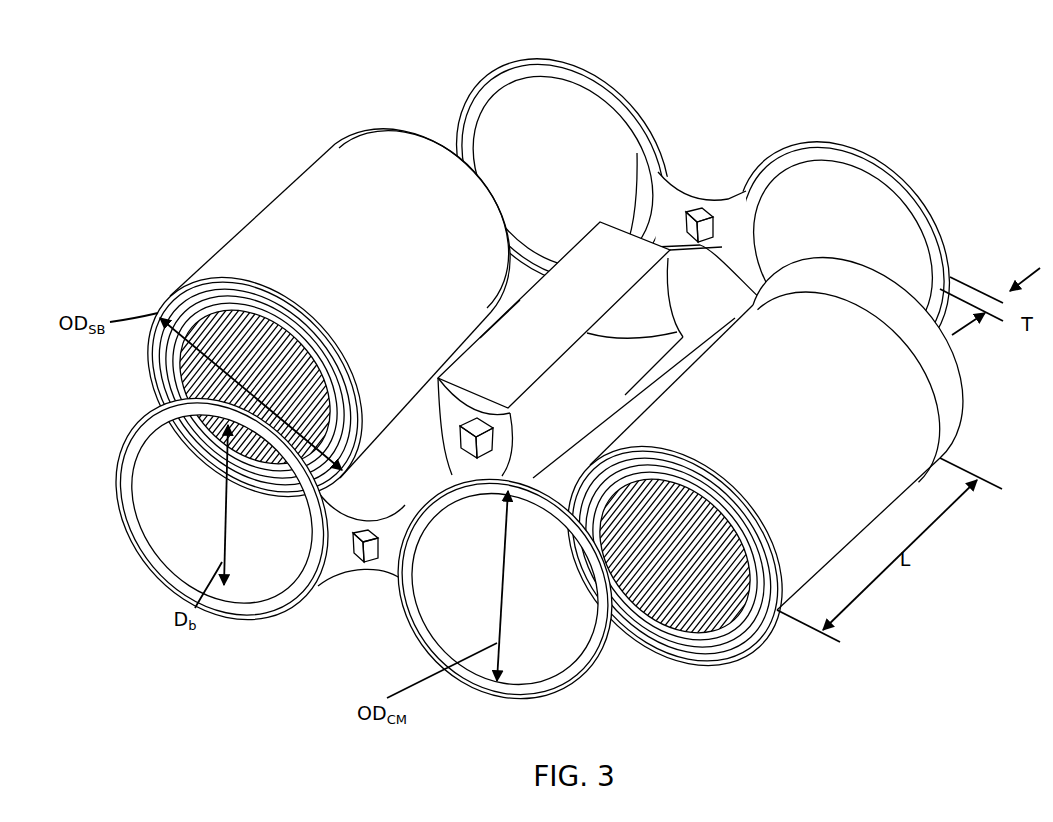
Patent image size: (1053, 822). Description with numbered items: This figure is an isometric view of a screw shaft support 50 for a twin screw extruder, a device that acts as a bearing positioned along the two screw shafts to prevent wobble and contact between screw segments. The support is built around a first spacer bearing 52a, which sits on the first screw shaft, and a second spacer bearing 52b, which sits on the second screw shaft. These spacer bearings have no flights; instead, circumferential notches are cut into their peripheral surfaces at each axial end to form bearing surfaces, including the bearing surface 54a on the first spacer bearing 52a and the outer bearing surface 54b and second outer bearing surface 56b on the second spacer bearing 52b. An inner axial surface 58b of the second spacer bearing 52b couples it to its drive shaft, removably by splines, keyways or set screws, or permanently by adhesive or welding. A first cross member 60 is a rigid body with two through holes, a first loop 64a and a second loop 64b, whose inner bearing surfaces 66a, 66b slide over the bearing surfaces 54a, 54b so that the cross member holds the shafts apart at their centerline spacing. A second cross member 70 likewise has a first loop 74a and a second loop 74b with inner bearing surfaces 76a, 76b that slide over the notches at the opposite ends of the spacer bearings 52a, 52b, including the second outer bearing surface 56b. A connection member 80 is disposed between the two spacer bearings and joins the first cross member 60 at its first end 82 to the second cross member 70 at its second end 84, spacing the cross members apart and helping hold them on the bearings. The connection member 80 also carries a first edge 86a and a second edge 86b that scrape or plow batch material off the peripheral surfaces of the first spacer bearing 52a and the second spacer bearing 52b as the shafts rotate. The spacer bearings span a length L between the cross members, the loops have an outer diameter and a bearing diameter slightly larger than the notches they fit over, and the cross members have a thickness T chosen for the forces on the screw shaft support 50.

The screw shaft support 50 is at (250, 46).
The first spacer bearing 52a is at (310, 218).
The second spacer bearing 52b is at (828, 420).
The bearing surface 54a is at (256, 308).
The outer bearing surface 54b is at (737, 525).
The second outer bearing surface 56b is at (913, 352).
The inner axial surface 58b is at (703, 643).
The first cross member 60 is at (122, 455).
The first loop 64a is at (138, 528).
The second loop 64b is at (612, 628).
The inner bearing surface 66a is at (177, 550).
The inner bearing surface 66b is at (440, 627).
The second cross member 70 is at (699, 190).
The first loop 74a is at (548, 70).
The second loop 74b is at (827, 148).
The inner bearing surface 76a is at (541, 255).
The inner bearing surface 76b is at (758, 267).
The connection member 80 is at (490, 353).
The first end 82 is at (458, 412).
The second end 84 is at (637, 153).
The first edge 86a is at (497, 323).
The second edge 86b is at (677, 332).